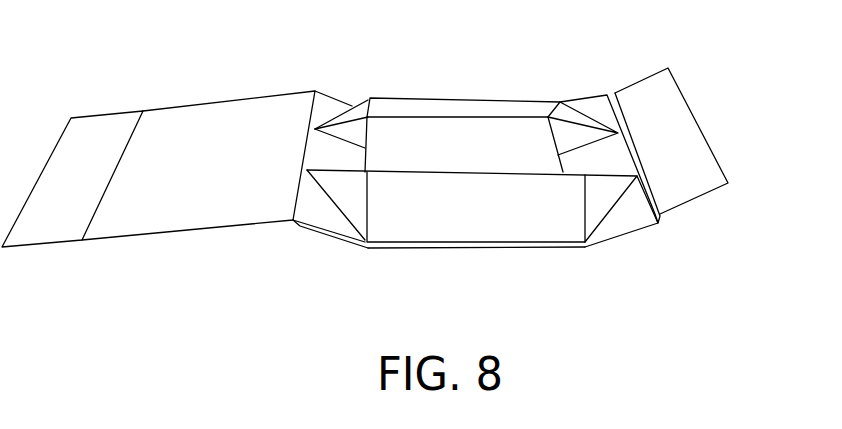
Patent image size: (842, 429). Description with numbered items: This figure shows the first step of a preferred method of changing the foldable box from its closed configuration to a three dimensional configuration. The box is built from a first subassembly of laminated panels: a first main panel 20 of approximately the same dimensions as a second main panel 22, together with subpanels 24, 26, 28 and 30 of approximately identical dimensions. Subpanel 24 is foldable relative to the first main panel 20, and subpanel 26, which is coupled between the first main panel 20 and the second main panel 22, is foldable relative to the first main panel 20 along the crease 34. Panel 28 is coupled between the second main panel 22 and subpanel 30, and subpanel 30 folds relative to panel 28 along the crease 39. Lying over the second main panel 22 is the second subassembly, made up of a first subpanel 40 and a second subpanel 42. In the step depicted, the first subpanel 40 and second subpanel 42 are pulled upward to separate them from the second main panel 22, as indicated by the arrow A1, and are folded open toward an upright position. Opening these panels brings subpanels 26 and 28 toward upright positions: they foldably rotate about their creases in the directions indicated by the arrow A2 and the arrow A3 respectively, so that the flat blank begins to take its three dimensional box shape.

The first main panel 20 is at (205, 100).
The second main panel 22 is at (512, 137).
The subpanel 24 is at (105, 113).
The subpanel 26 is at (313, 212).
The panel 28 is at (630, 218).
The subpanel 30 is at (710, 138).
The crease 34 is at (310, 112).
The crease 39 is at (660, 210).
The first subpanel 40 is at (403, 110).
The second subpanel 42 is at (428, 232).
The arrow A1 is at (460, 134).
The arrow A2 is at (388, 275).
The arrow A3 is at (593, 275).